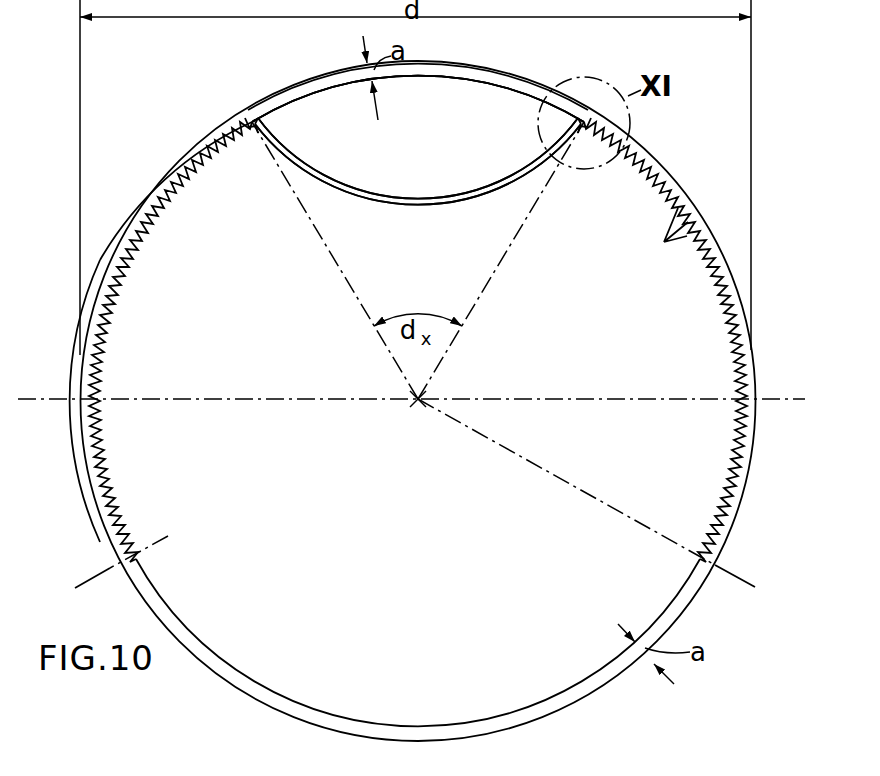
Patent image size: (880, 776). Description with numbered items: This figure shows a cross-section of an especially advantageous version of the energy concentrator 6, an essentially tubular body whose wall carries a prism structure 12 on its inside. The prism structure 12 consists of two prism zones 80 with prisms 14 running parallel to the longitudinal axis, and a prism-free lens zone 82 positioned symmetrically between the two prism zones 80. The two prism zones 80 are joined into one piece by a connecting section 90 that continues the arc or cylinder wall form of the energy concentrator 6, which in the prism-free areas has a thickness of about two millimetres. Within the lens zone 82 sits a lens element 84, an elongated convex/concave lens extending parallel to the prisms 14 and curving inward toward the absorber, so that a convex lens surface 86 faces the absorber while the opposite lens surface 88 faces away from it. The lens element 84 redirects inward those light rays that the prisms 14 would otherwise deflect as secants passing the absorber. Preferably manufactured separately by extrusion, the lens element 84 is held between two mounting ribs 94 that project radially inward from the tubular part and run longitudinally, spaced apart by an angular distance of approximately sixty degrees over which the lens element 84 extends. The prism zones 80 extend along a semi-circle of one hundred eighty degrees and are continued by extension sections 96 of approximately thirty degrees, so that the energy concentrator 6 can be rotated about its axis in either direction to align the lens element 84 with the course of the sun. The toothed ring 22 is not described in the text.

The energy concentrator 6 is at (79, 380).
The prism structure 12 is at (249, 119).
The prisms 14 is at (659, 238).
The toothed ring 22 is at (164, 184).
The prism zones 80 is at (113, 260).
The prism-free lens zone 82 is at (499, 66).
The lens element 84 is at (498, 194).
The convex lens surface 86 is at (386, 207).
The lens surface 88 is at (437, 194).
The connecting section 90 is at (322, 82).
The mounting ribs 94 is at (251, 138).
The extension sections 96 is at (38, 399).